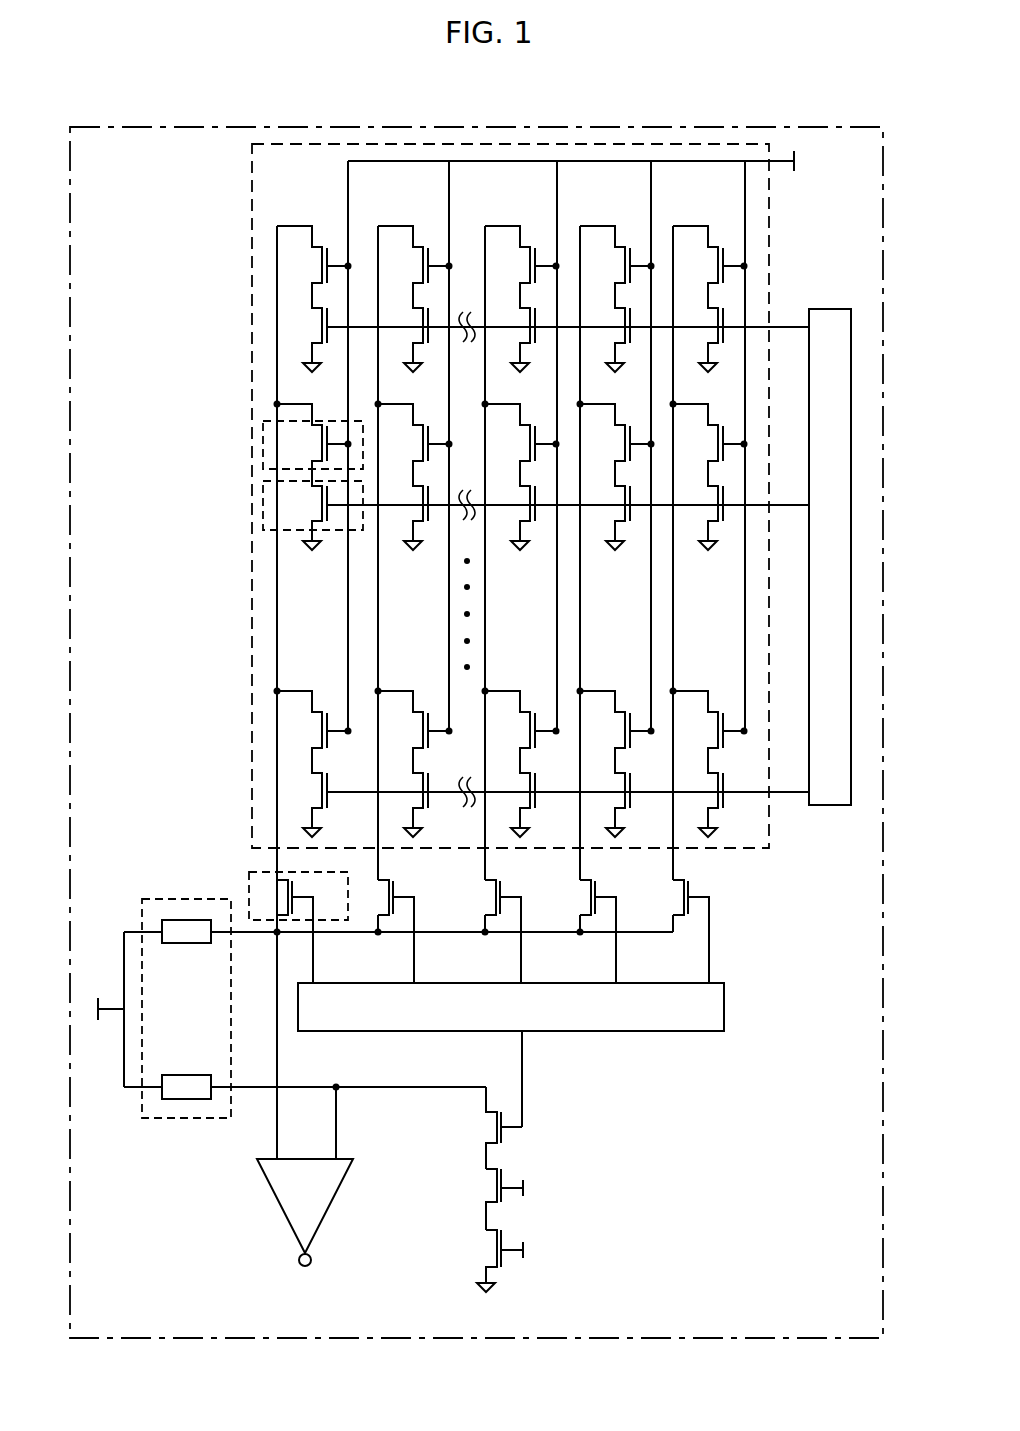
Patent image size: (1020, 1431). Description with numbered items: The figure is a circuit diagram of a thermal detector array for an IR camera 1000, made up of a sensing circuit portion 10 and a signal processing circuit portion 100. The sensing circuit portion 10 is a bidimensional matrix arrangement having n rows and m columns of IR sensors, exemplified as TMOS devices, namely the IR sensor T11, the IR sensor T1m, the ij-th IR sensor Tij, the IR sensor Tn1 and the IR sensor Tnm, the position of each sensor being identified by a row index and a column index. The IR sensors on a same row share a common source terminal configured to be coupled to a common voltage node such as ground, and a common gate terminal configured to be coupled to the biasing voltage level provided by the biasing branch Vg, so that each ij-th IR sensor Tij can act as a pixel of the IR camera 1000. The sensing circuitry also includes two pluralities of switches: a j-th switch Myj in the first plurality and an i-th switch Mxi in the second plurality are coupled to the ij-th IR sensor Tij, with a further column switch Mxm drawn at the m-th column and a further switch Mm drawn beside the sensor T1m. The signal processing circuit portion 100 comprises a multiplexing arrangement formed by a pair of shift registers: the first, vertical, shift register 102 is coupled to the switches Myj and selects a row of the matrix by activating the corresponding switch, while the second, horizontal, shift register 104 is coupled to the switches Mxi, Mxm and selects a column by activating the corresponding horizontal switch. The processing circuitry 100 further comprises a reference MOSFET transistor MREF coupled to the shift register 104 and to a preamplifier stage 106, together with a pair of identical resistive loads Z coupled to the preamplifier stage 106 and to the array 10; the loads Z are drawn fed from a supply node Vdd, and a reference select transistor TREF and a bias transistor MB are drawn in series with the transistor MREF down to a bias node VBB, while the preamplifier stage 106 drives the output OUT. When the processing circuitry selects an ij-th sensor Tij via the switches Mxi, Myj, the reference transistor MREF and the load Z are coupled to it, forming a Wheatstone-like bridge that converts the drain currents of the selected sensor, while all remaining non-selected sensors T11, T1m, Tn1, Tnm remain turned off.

The sensing circuit portion 10 is at (258, 197).
The signal processing circuit portion 100 is at (415, 1266).
The first shift register 102 is at (830, 330).
The second shift register 104 is at (660, 1012).
The preamplifier stage 106 is at (290, 1187).
The IR camera 1000 is at (672, 1300).
The IR sensor T11 is at (303, 266).
The IR sensor T1m is at (725, 242).
The memory transistor (first row, column m) Mm is at (731, 319).
The ij-th IR sensor Tij is at (243, 466).
The j-th switch Myj is at (243, 521).
The IR sensor Tn1 is at (305, 792).
The IR sensor Tnm is at (722, 823).
The i-th switch Mxi is at (243, 875).
The column select transistor (column m) Mxm is at (694, 922).
The reference transistor MREF is at (490, 1130).
The reference select transistor TREF is at (490, 1200).
The bias transistor MB is at (485, 1250).
The resistive loads Z is at (185, 1124).
The biasing branch Vg is at (588, 169).
The supply voltage terminal Vdd is at (100, 1009).
The output terminal OUT is at (302, 1284).
The bias voltage terminal VBB is at (513, 1305).